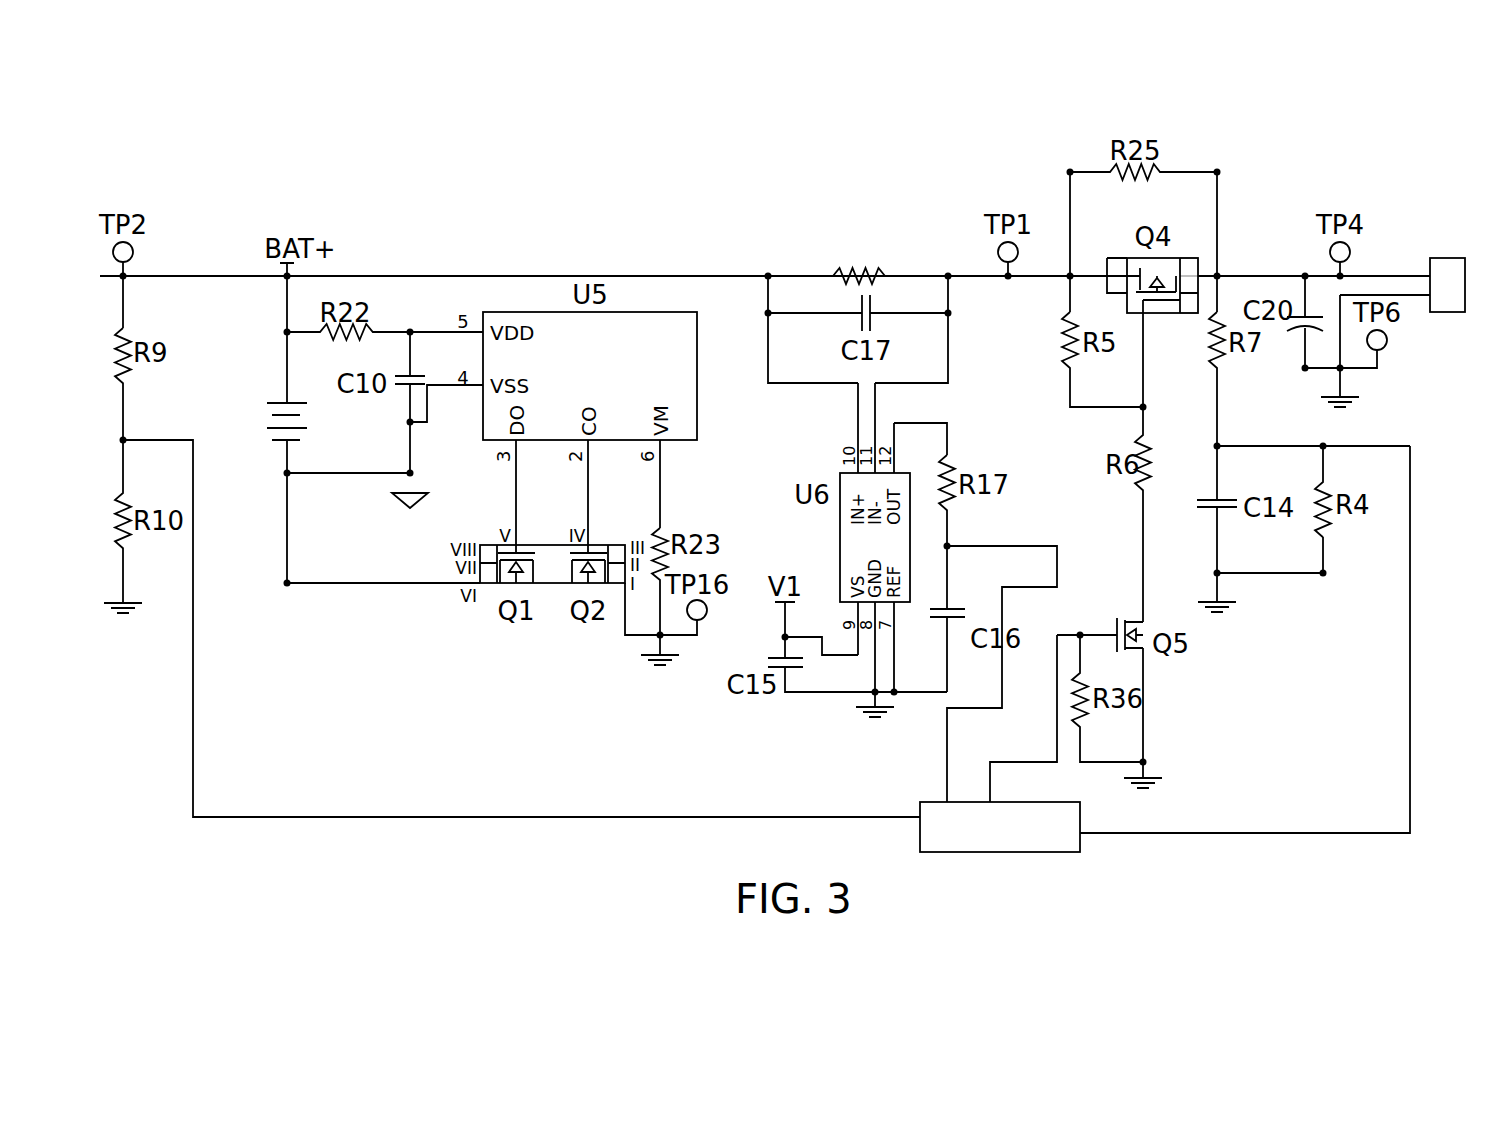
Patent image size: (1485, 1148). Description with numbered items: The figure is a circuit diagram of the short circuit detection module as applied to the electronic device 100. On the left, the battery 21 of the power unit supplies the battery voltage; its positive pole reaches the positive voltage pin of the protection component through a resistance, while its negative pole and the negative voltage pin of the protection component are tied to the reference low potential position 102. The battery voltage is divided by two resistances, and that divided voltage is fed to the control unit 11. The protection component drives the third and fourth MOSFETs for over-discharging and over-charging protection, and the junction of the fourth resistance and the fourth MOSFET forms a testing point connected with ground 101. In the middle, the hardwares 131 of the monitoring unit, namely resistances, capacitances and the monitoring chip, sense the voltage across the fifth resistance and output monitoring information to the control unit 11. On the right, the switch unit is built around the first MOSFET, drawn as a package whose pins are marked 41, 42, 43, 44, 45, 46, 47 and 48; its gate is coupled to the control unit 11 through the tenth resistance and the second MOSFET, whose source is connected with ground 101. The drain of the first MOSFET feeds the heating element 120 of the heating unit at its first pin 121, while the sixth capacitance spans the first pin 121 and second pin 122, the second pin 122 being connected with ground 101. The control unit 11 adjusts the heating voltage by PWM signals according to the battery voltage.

The electronic device 100 is at (197, 124).
The control unit 11 is at (920, 832).
The battery 21 is at (307, 428).
The ground 101 is at (123, 617).
The reference low potential position 102 is at (410, 510).
The heating element 120 is at (1441, 258).
The first pin 121 is at (1385, 265).
The second pin 122 is at (1385, 286).
The hardwares 131 is at (893, 255).
The pin 1 of transistor Q4 41 is at (1116, 249).
The pin 2 of transistor Q4 42 is at (1117, 268).
The pin 3 of transistor Q4 43 is at (1117, 285).
The pin 4 of transistor Q4 44 is at (1130, 360).
The pin 5 of transistor Q4 45 is at (1189, 249).
The pin 6 of transistor Q4 46 is at (1189, 268).
The pin 7 of transistor Q4 47 is at (1189, 285).
The pin 8 of transistor Q4 48 is at (1189, 304).